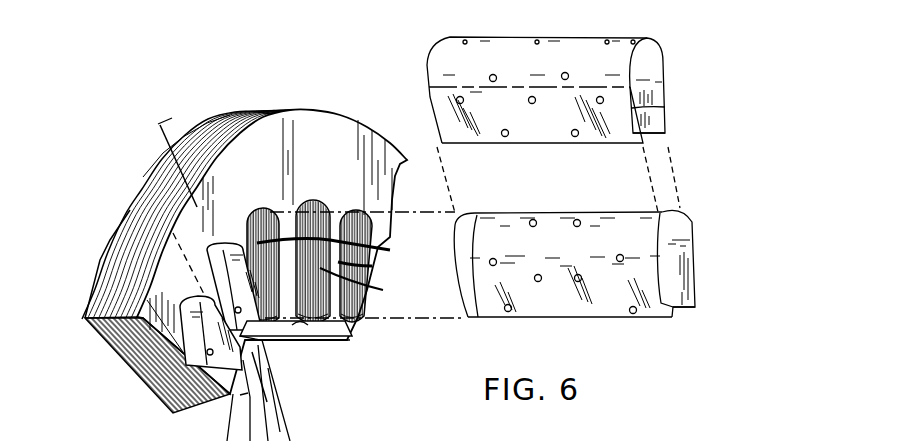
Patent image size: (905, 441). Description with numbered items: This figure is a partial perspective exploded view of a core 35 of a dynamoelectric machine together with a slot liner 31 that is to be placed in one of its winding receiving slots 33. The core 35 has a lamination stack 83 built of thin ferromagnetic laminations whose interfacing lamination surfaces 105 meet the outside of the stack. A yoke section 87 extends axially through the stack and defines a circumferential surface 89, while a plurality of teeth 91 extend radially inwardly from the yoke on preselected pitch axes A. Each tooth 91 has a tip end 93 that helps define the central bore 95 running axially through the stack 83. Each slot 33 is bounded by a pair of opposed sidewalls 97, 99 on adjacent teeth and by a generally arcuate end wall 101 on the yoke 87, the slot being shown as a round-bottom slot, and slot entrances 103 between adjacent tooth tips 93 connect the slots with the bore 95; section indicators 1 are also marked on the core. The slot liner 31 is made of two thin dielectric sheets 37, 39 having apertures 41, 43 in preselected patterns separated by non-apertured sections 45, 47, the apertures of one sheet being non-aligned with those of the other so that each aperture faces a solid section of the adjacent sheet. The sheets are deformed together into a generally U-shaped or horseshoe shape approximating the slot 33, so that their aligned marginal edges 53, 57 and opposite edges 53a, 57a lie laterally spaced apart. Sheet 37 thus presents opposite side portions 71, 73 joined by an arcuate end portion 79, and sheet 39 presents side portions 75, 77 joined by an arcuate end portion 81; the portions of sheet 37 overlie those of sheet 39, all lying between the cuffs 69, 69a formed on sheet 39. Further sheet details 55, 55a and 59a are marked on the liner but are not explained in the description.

The section line 1- 1 is at (166, 125).
The slot liner assembly 31 is at (472, 353).
The winding receiving slot 33 is at (257, 209).
The core 35 is at (298, 105).
The sheet 37 is at (427, 48).
The sheet 39 is at (694, 226).
The apertures 41 is at (493, 74).
The apertures 43 is at (535, 219).
The non-apertured sections 45 is at (590, 82).
The non-apertured sections 47 is at (603, 243).
The marginal edge 53 is at (557, 143).
The opposite marginal edge 53a is at (660, 136).
The bend line 55 is at (663, 108).
The side edge 55a is at (433, 117).
The marginal edge 57 is at (577, 317).
The opposite marginal edge 57a is at (685, 308).
The lower edge 59a is at (468, 310).
The cuff 69 is at (671, 319).
The cuff 69a is at (477, 318).
The side portion 71 is at (613, 135).
The side portion 73 is at (660, 93).
The side portion 75 is at (147, 287).
The side portion 77 is at (690, 273).
The arcuate end portion 79 is at (633, 37).
The arcuate end portion 81 is at (627, 223).
The lamination stack 83 is at (272, 110).
The yoke section 87 is at (333, 133).
The circumferential surface 89 is at (165, 172).
The teeth 91 is at (290, 267).
The tip end 93 is at (298, 332).
The bore 95 is at (232, 410).
The sidewall 97 is at (294, 215).
The sidewall 99 is at (336, 266).
The arcuate end wall 101 is at (312, 200).
The slot entrances 103 is at (262, 397).
The interfacing lamination surfaces 105 is at (80, 263).
The pitch axes A is at (137, 166).